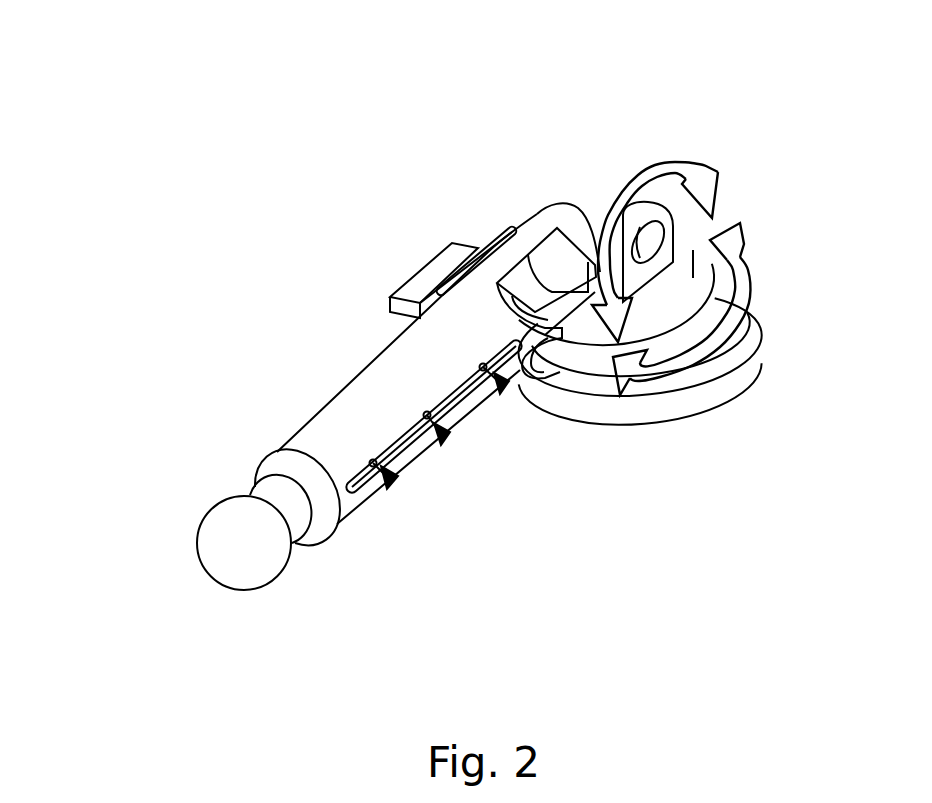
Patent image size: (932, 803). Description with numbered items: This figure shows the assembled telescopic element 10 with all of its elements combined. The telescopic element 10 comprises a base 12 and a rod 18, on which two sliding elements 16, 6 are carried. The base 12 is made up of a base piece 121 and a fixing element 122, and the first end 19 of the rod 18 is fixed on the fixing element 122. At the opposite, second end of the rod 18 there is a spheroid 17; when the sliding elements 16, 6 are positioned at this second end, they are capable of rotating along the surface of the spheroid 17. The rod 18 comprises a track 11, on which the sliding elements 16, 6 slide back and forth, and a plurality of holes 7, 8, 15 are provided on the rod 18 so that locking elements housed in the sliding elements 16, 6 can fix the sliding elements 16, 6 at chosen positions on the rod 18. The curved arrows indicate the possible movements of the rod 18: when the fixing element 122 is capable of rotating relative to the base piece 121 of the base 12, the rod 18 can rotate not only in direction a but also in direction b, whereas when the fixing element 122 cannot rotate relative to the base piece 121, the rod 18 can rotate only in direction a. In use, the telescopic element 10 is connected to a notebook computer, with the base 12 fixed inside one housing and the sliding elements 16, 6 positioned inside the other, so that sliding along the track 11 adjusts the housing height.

The telescopic element 10 is at (345, 97).
The sliding element 6 is at (529, 258).
The hole 7 is at (388, 478).
The hole 8 is at (441, 434).
The track 11 is at (453, 410).
The base 12 is at (789, 296).
The base piece 121 is at (683, 398).
The fixing element 122 is at (690, 250).
The hole 15 is at (505, 377).
The sliding element 16 is at (414, 288).
The spheroid 17 is at (248, 563).
The rod 18 is at (554, 553).
The first end 19 is at (601, 238).
The direction a is at (655, 237).
The direction b is at (691, 309).